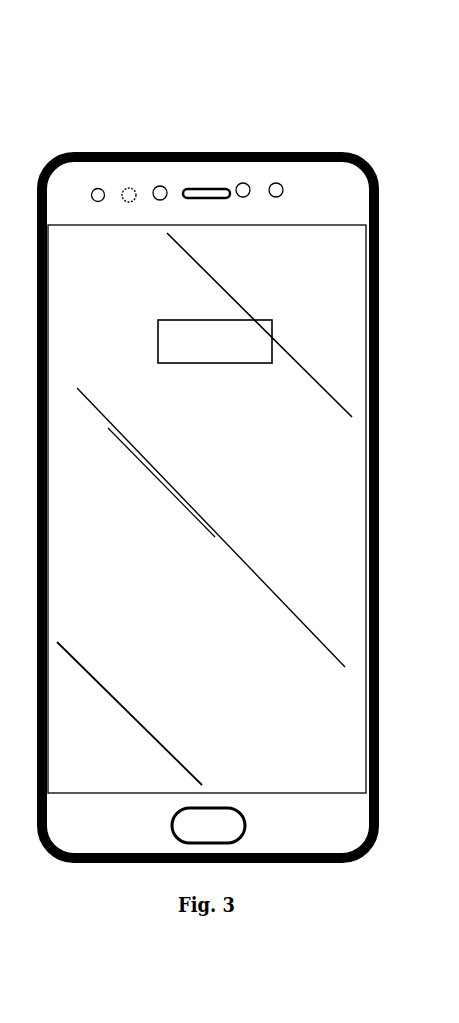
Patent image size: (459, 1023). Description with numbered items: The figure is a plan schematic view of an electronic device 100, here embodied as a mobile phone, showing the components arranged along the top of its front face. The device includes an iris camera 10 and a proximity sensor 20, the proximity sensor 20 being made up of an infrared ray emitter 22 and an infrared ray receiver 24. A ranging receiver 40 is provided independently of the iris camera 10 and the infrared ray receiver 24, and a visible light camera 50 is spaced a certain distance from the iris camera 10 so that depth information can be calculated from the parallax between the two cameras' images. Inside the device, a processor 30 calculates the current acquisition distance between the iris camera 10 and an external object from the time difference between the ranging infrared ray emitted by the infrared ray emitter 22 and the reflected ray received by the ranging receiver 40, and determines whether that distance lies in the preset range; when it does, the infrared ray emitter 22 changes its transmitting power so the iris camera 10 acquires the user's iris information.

The electronic device 100 is at (216, 38).
The proximity sensor 20 is at (102, 138).
The infrared ray receiver 24 is at (98, 189).
The infrared ray emitter 22 is at (128, 188).
The iris camera 10 is at (162, 186).
The visible light camera 50 is at (245, 183).
The ranging receiver 40 is at (277, 183).
The processor 30 is at (272, 342).